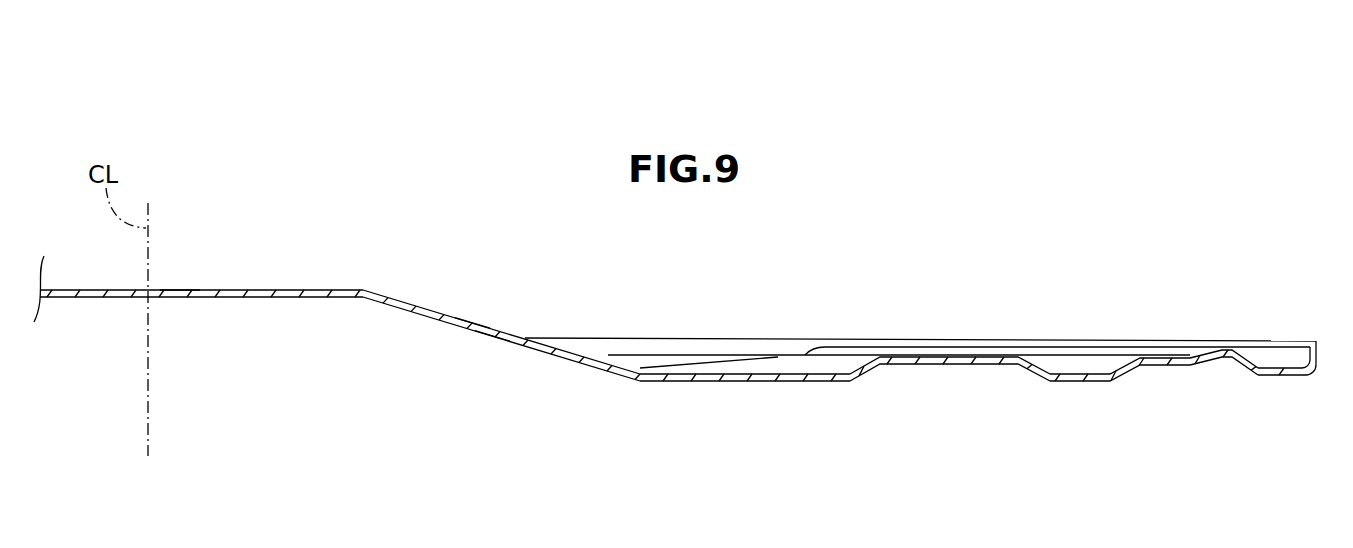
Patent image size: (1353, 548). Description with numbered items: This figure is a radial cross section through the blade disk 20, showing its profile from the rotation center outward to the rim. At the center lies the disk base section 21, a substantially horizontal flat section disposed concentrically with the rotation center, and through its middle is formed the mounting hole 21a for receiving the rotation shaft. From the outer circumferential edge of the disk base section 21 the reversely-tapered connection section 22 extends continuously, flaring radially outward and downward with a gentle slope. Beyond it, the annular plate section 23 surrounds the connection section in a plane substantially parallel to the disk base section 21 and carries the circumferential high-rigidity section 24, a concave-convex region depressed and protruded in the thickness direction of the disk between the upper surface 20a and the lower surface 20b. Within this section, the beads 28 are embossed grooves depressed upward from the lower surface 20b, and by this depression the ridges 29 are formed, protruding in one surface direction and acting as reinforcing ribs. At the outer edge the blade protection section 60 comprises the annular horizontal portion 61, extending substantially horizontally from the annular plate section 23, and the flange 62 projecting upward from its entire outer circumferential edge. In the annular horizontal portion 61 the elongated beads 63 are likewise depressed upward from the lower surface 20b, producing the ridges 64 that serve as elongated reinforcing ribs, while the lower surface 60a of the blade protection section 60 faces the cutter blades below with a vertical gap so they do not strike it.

The blade disk 20 is at (172, 133).
The disk base section 21 is at (262, 289).
The mounting hole 21a is at (178, 289).
The reversely-tapered connection section 22 is at (410, 303).
The upper surface 20a is at (472, 322).
The lower surface 20b is at (490, 336).
The annular plate section 23 is at (820, 372).
The circumferential high-rigidity section 24 is at (918, 336).
The bead 28 is at (945, 370).
The ridge 29 is at (985, 357).
The ridge 64 is at (1222, 351).
The elongated bead 63 is at (1230, 362).
The blade protection section 60 is at (1325, 266).
The annular horizontal portion 61 is at (1283, 362).
The flange 62 is at (1318, 355).
The lower surface of the blade protection section 60a is at (1272, 376).